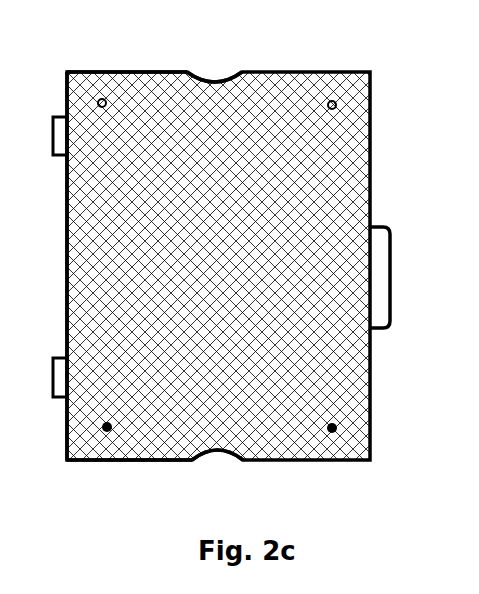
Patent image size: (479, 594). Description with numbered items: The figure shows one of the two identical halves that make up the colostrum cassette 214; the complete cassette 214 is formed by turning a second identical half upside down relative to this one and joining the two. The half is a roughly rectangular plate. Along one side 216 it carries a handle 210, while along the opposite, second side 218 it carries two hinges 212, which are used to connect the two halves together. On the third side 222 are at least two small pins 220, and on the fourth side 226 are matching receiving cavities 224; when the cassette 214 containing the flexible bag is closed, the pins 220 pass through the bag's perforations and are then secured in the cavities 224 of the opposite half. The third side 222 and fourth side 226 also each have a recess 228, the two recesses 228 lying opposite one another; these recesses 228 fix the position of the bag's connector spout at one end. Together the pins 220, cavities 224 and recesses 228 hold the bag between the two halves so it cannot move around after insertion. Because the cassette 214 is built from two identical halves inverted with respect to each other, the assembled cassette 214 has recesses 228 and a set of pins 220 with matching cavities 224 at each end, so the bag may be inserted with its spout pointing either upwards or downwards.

The handle 210 is at (380, 228).
The hinges 212 is at (53, 157).
The cassette 214 is at (218, 266).
The one side 216 is at (370, 150).
The second side 218 is at (64, 440).
The pins 220 is at (112, 430).
The third side 222 is at (98, 462).
The receiving cavities 224 is at (106, 101).
The fourth side 226 is at (121, 70).
The recesses 228 is at (221, 80).